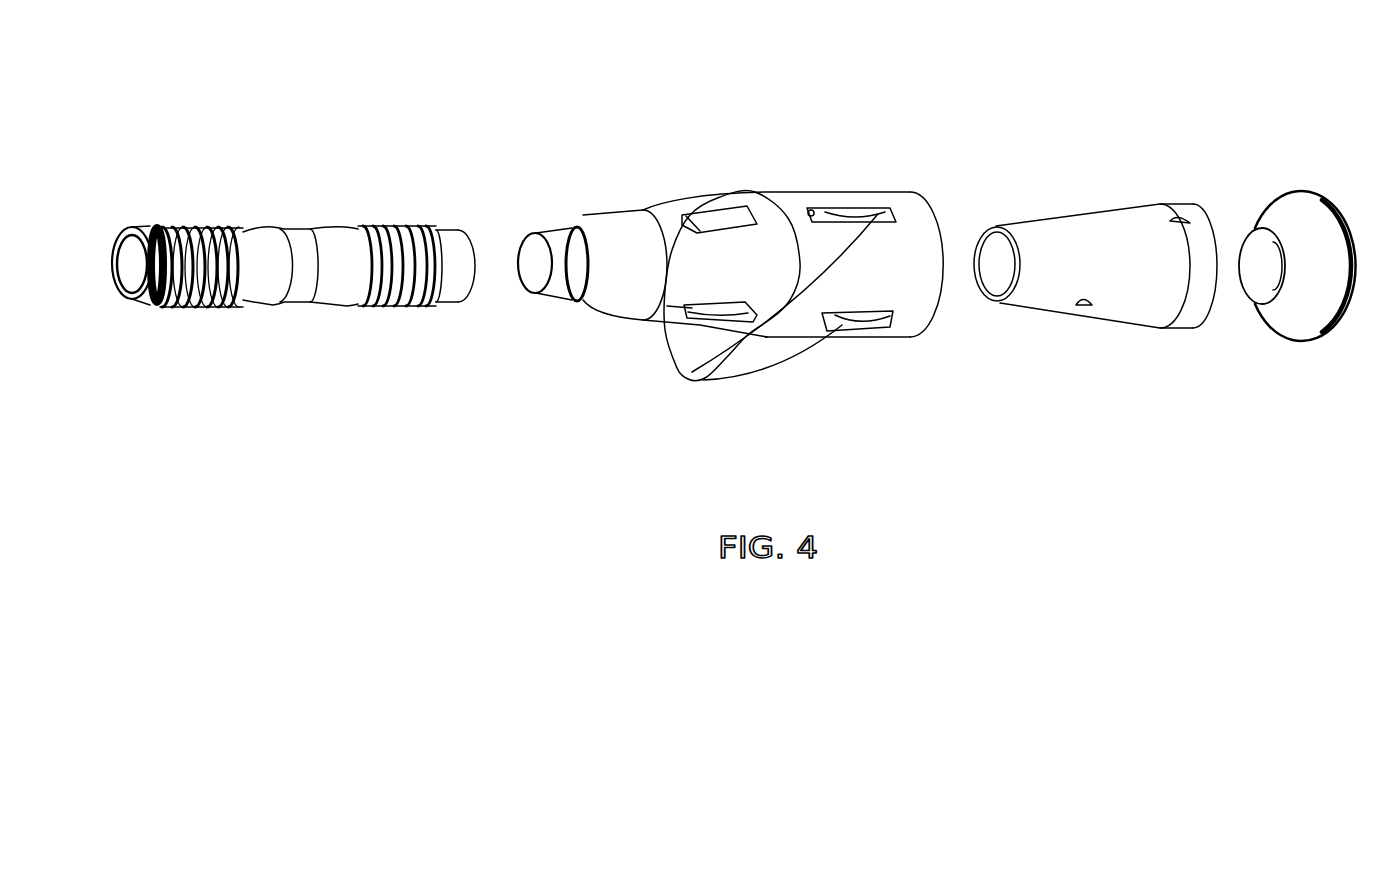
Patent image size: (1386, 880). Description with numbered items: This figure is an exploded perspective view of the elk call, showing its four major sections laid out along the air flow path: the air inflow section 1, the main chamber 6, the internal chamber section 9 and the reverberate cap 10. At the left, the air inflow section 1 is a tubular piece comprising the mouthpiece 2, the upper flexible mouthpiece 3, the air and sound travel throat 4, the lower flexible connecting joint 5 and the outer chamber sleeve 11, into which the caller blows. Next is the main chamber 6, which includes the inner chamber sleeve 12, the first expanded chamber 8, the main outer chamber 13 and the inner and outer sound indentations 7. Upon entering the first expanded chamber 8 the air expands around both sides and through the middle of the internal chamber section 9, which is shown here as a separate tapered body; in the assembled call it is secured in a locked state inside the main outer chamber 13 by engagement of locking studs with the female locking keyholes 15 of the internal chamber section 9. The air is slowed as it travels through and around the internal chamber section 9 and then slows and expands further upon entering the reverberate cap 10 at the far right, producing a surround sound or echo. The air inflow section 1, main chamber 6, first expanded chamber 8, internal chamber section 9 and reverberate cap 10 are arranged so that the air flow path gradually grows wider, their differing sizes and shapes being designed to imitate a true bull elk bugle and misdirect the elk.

The air inflow section 1 is at (257, 133).
The mouthpiece 2 is at (152, 226).
The upper flexible mouthpiece 3 is at (200, 307).
The air and sound travel throat 4 is at (293, 297).
The lower flexible connecting joint 5 is at (377, 307).
The main chamber 6 is at (692, 110).
The inner and outer sound indentations 7 is at (793, 287).
The first expanded chamber 8 is at (585, 225).
The internal chamber section 9 is at (1028, 232).
The reverberate cap 10 is at (1280, 213).
The outer chamber sleeve 11 is at (437, 240).
The inner chamber sleeve 12 is at (565, 283).
The main outer chamber 13 is at (767, 230).
The female locking keyholes 15 is at (1177, 226).